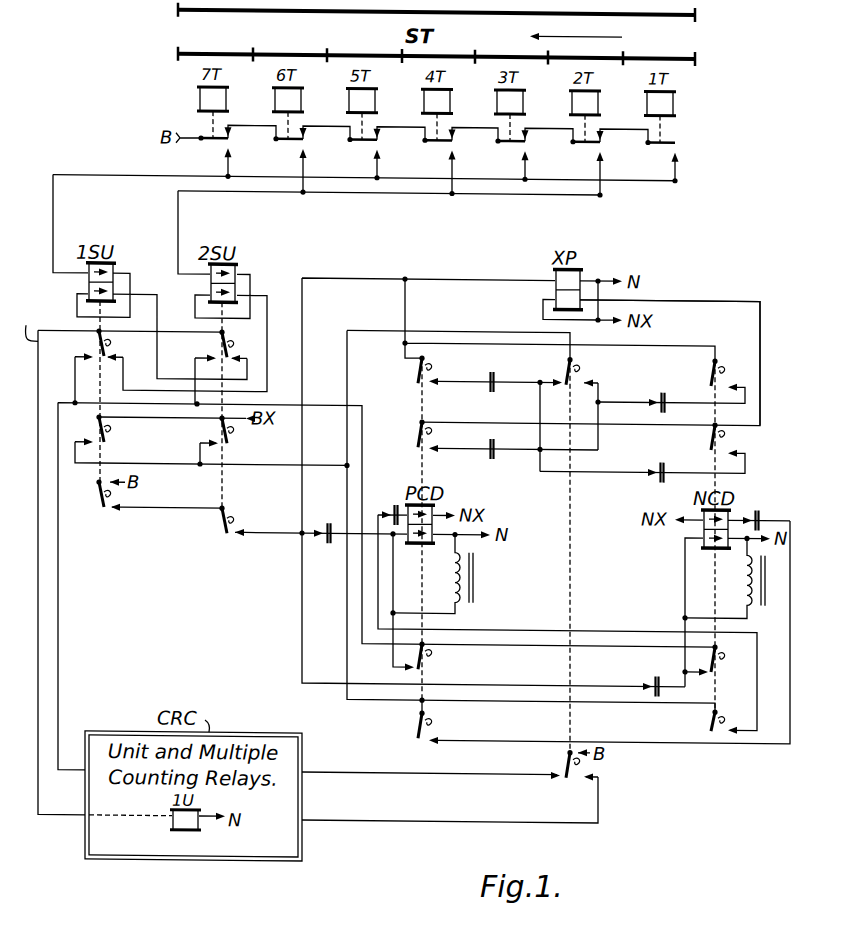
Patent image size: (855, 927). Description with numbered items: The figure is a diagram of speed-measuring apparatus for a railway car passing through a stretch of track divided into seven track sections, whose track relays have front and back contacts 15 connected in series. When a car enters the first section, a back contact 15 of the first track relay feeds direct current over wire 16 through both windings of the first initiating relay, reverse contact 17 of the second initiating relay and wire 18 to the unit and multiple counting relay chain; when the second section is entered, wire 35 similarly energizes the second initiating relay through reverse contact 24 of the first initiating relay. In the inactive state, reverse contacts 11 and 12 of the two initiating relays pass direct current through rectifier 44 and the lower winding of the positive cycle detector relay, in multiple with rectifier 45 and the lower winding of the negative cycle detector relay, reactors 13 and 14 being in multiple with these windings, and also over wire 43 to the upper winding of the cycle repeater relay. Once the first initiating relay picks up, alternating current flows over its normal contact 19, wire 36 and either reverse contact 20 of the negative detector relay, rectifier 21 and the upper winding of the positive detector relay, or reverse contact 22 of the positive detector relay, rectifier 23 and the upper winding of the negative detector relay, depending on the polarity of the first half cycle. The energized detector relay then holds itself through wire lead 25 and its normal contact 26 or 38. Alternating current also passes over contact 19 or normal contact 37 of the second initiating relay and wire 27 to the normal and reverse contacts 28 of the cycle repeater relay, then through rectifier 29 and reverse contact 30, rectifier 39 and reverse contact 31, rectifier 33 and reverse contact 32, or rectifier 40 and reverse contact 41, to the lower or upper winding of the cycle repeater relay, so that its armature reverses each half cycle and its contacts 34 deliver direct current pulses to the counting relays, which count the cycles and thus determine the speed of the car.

The reverse contact of relay 1SU 11 is at (100, 504).
The reverse contact of relay 2SU 12 is at (226, 524).
The reactor 13 is at (462, 601).
The reactor 14 is at (750, 605).
The track relay contacts 15 is at (658, 140).
The wire 16 is at (53, 210).
The contact of relay 2SU 17 is at (220, 337).
The wire 18 is at (95, 560).
The normal contact of relay 1SU 19 is at (97, 421).
The reverse contact of relay NCD 20 is at (706, 724).
The rectifier 21 is at (394, 503).
The reverse contact of relay PCD 22 is at (415, 726).
The rectifier 23 is at (782, 512).
The contact of relay 1SU 24 is at (97, 337).
The wire lead 25 is at (364, 410).
The normal contact of relay PCD 26 is at (425, 666).
The wire lead 27 is at (377, 326).
The contact of relay XP 28 is at (572, 357).
The rectifier 29 is at (661, 456).
The reverse contact of relay NCD 30 is at (710, 438).
The reverse contact of relay PCD 31 is at (417, 366).
The reverse contact of relay NCD 32 is at (710, 368).
The rectifier 33 is at (662, 384).
The contact of relay XP 34 is at (568, 754).
The wire 35 is at (178, 212).
The wire 36 is at (346, 624).
The normal contact of relay 2SU 37 is at (221, 430).
The normal contact of relay NCD 38 is at (714, 668).
The rectifier 39 is at (494, 374).
The rectifier 40 is at (506, 443).
The reverse contact of relay PCD 41 is at (417, 431).
The wire 43 is at (382, 274).
The rectifier 44 is at (327, 541).
The rectifier 45 is at (657, 668).